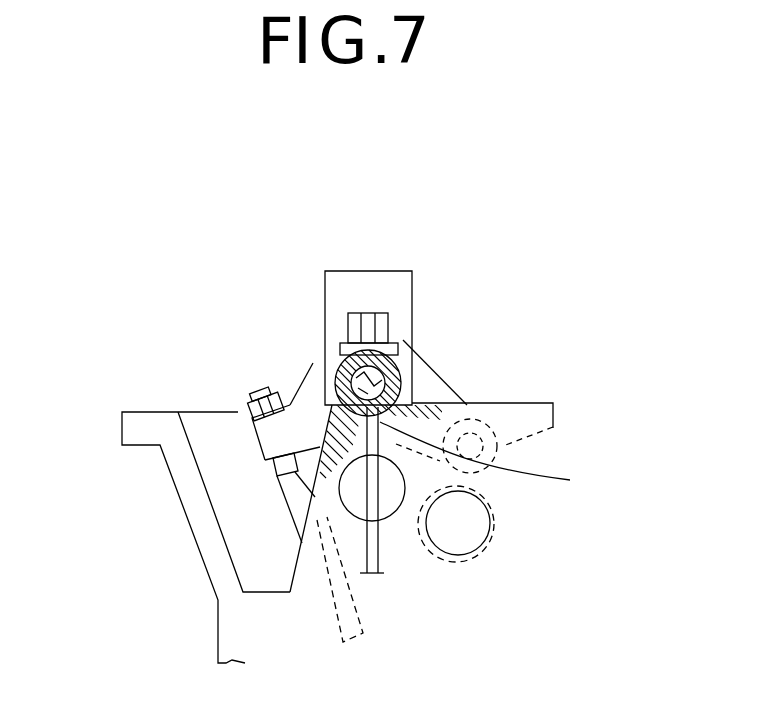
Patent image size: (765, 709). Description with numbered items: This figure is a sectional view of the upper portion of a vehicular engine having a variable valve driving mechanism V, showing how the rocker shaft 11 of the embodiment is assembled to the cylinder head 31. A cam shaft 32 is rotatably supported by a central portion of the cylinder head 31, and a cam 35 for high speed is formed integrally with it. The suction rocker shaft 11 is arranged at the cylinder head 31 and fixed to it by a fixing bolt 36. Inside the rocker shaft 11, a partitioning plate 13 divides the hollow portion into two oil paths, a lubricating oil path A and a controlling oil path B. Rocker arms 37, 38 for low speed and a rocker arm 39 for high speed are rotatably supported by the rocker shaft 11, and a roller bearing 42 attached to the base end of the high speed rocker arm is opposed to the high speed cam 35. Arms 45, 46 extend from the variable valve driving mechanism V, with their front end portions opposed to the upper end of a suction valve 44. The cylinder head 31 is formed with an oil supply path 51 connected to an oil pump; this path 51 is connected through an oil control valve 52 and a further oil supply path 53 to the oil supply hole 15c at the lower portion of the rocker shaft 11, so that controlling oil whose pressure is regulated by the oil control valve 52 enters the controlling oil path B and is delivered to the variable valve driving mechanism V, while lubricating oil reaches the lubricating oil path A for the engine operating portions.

The variable valve driving mechanism V is at (335, 267).
The fixing bolt 36 is at (368, 312).
The arm 45 is at (266, 343).
The arm 46 is at (313, 363).
The lubricating oil path A is at (415, 352).
The rocker shaft 11 is at (428, 377).
The rocker arm for low speed 37 is at (480, 345).
The rocker arm for low speed 38 is at (480, 345).
The rocker arm for high speed 39 is at (437, 378).
The controlling oil path B is at (333, 385).
The partitioning plate 13 is at (412, 393).
The cylinder head 31 is at (122, 432).
The roller bearing 42 is at (563, 422).
The oil supply hole 15c is at (500, 448).
The suction valve 44 is at (292, 486).
The cam for high speed 35 is at (498, 528).
The oil control valve 52 is at (350, 497).
The oil supply path 53 is at (385, 443).
The cam shaft 32 is at (477, 537).
The oil supply path 51 is at (380, 550).